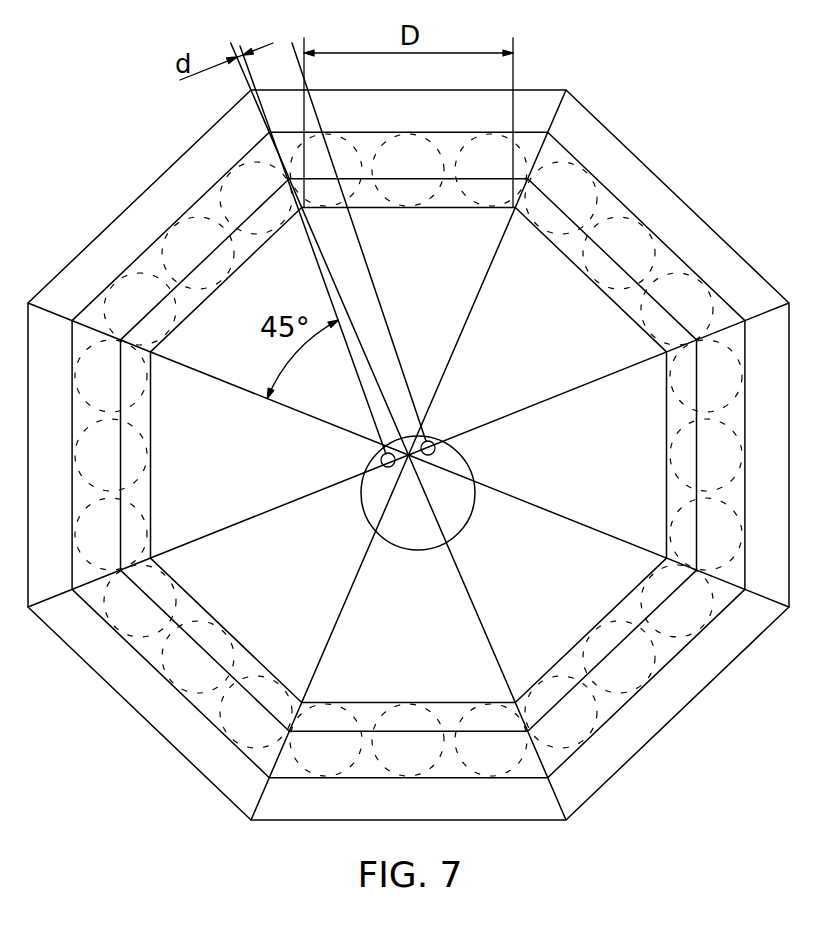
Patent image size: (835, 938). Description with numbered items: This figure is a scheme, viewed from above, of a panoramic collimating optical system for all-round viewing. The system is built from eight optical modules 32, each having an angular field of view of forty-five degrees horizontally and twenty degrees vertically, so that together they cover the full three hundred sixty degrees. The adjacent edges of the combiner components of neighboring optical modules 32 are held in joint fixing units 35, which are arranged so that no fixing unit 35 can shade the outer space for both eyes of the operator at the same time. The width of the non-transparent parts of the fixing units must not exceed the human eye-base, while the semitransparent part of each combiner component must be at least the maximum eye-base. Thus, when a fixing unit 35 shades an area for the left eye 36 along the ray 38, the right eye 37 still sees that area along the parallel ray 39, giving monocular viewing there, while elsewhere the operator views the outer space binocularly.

The optical module 32 is at (542, 108).
The joint fixing unit 35 is at (277, 173).
The left eye 36 is at (380, 455).
The right eye 37 is at (434, 433).
The ray 38 is at (353, 352).
The ray 39 is at (447, 362).